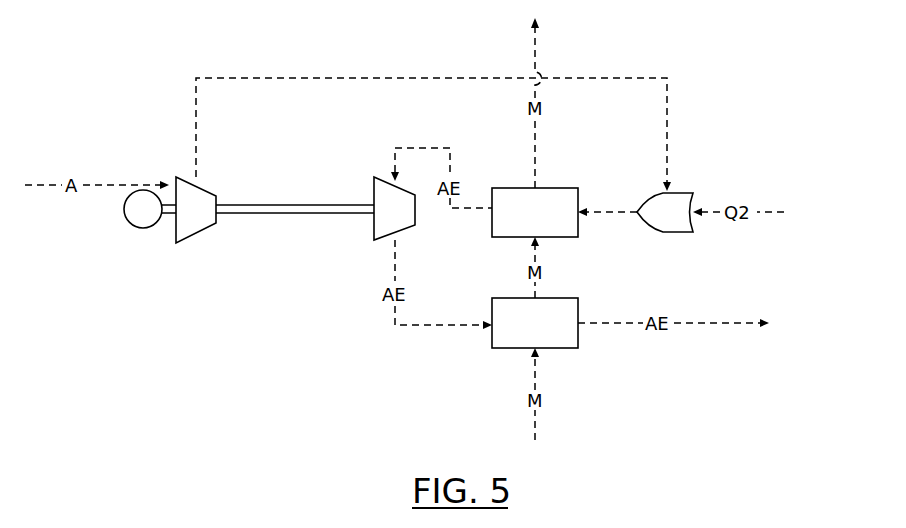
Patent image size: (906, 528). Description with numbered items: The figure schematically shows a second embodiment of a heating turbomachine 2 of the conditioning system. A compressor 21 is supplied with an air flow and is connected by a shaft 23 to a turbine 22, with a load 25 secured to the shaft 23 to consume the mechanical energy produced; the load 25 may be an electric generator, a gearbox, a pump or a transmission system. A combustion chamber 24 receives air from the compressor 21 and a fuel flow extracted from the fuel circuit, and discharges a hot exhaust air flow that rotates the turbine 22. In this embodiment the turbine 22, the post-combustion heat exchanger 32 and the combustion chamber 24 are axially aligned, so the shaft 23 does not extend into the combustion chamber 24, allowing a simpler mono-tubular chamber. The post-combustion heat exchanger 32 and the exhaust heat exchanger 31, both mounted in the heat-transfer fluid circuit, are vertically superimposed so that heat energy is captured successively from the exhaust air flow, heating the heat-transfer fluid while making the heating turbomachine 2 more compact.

The heating turbomachine 2 is at (160, 131).
The compressor 21 is at (196, 210).
The turbine 22 is at (394, 208).
The shaft 23 is at (302, 217).
The combustion chamber 24 is at (665, 212).
The load 25 is at (146, 227).
The exhaust heat exchanger 31 is at (535, 323).
The post-combustion heat exchanger 32 is at (535, 212).